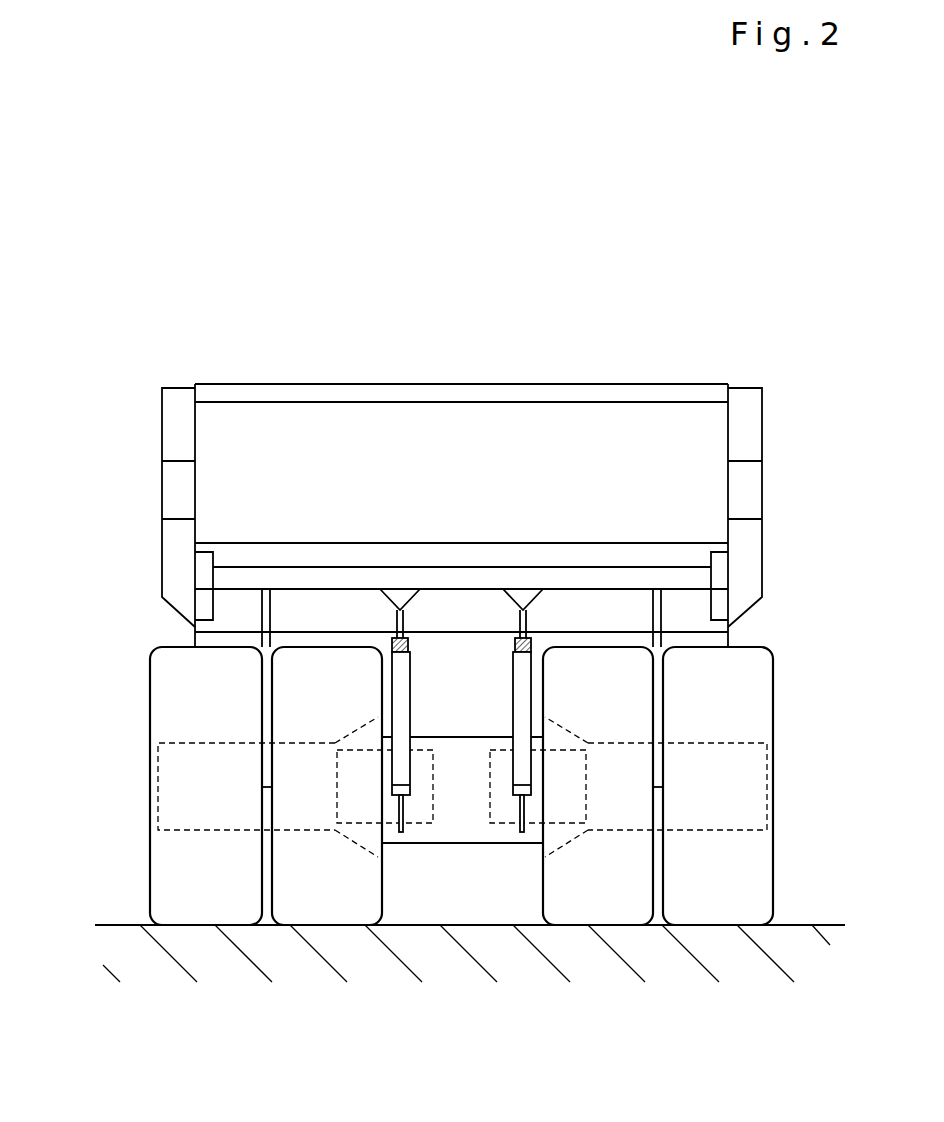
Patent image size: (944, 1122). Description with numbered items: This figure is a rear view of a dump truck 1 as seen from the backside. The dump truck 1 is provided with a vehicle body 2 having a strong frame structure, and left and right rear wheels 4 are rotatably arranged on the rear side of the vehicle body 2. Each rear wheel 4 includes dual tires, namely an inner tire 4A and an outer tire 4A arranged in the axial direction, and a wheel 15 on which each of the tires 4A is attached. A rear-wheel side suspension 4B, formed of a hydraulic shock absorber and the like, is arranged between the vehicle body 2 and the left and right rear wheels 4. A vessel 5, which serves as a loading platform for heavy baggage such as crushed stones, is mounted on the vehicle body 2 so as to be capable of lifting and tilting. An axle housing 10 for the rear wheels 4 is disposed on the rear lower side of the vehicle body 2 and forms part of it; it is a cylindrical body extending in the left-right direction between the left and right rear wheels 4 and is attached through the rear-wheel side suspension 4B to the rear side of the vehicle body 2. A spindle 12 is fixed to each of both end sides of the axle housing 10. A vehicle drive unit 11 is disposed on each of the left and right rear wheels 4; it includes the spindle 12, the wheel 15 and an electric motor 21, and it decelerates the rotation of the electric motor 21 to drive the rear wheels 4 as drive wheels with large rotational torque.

The dump truck 1 is at (302, 342).
The vehicle body 2 is at (456, 680).
The rear wheel 4 is at (140, 660).
The tire 4A is at (320, 676).
The rear-wheel side suspension 4B is at (403, 689).
The vessel 5 is at (528, 450).
The axle housing 10 is at (461, 823).
The vehicle drive unit 11 is at (148, 777).
The spindle 12 is at (357, 845).
The wheel 15 is at (183, 830).
The electric motor 21 is at (415, 800).